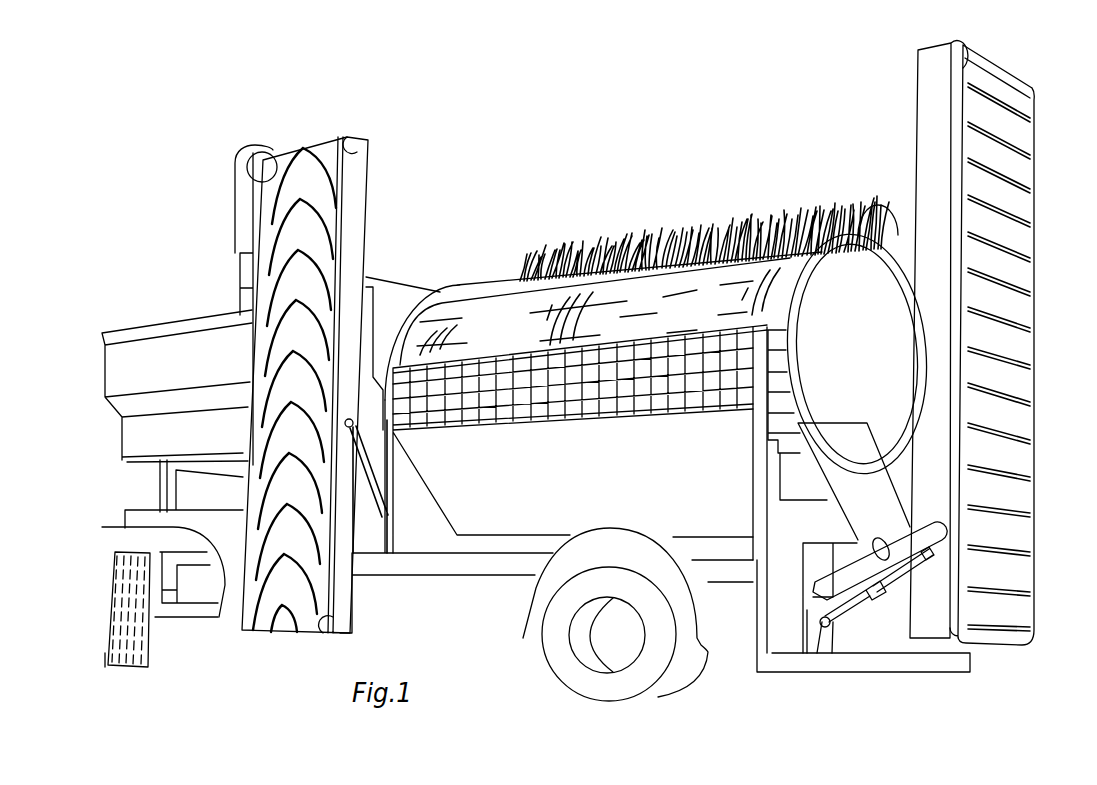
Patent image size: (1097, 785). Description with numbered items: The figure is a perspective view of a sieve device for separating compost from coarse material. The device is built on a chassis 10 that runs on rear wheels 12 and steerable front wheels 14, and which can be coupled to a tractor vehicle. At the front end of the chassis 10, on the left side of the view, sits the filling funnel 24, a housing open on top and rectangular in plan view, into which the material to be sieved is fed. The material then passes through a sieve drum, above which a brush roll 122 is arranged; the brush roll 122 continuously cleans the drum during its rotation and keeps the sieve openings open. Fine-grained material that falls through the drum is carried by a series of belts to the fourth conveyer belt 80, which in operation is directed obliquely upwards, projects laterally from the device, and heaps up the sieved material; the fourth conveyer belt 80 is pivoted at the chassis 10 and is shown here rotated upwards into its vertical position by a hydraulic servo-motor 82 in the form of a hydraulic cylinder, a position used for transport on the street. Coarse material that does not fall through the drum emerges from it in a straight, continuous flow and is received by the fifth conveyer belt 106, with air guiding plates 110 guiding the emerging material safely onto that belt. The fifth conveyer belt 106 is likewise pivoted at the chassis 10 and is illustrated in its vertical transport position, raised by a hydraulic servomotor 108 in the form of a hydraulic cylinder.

The chassis 10 is at (452, 545).
The rear wheels 12 is at (640, 673).
The front wheels 14 is at (140, 647).
The filling funnel 24 is at (173, 355).
The fourth conveyer belt 80 is at (357, 203).
The hydraulic servo-motor 82 is at (660, 391).
The fifth conveyer belt 106 is at (1013, 277).
The hydraulic servomotor 108 is at (865, 600).
The air guiding plates 110 is at (838, 447).
The brush roll 122 is at (783, 210).